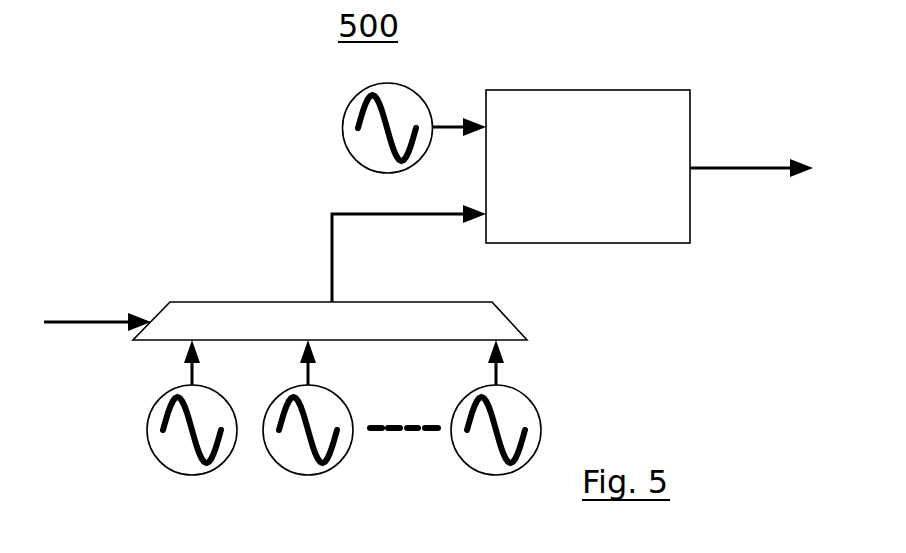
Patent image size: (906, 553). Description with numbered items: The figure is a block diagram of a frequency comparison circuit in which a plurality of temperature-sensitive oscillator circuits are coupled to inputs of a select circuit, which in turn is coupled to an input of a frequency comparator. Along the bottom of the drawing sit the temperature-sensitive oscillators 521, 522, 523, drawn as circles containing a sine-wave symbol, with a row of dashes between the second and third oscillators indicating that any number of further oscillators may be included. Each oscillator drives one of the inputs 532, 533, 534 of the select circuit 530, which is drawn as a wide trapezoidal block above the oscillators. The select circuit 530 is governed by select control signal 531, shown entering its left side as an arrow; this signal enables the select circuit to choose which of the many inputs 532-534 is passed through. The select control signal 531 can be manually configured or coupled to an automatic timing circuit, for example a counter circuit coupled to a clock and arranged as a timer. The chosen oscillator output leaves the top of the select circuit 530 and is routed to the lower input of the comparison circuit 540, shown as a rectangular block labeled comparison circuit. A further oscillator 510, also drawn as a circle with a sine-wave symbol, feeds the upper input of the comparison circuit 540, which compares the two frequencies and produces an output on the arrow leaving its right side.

The reference oscillator 510 is at (343, 141).
The temperature-sensitive oscillator 521 is at (147, 442).
The temperature-sensitive oscillator 522 is at (283, 475).
The temperature-sensitive oscillator 523 is at (462, 463).
The select circuit 530 is at (260, 302).
The select control signal 531 is at (103, 317).
The input 532 is at (192, 372).
The input 533 is at (308, 372).
The input 534 is at (496, 372).
The comparison circuit 540 is at (582, 90).